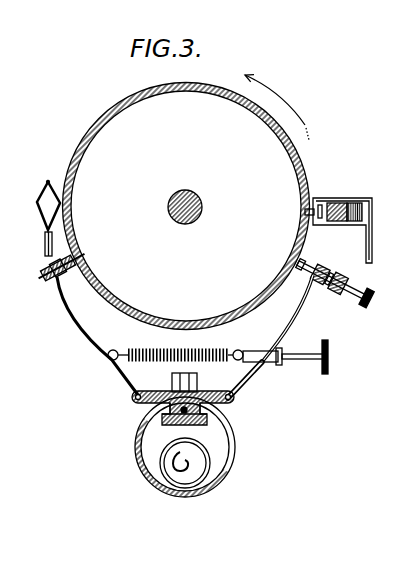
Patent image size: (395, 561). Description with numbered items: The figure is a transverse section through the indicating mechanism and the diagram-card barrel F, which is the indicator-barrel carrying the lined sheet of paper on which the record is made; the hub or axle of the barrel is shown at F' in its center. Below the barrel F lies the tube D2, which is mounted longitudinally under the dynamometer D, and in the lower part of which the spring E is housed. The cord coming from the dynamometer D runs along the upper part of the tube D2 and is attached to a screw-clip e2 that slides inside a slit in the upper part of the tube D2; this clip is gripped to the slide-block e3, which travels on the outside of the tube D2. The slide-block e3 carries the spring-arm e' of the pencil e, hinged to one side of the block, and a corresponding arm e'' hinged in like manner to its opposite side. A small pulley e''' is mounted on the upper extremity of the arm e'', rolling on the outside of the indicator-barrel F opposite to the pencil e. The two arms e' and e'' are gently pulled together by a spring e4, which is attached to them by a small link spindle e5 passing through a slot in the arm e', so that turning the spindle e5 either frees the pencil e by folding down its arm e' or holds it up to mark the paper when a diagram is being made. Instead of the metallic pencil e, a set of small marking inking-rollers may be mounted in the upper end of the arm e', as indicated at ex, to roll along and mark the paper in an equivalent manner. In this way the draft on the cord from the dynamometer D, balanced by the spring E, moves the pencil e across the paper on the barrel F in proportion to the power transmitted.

The indicator-barrel F is at (186, 206).
The hub or axle of the wheel F' is at (185, 223).
The marking inking-rollers ex is at (333, 204).
The recording-pencil e is at (334, 277).
The spring-arm e' is at (309, 319).
The corresponding arm e'' is at (80, 313).
The small pulley e''' is at (52, 234).
The screw-clip e2 is at (204, 411).
The slide-block e3 is at (205, 396).
The spring e4 is at (223, 352).
The link spindle e5 is at (297, 358).
The dynamometer D is at (166, 421).
The tube D2 is at (139, 430).
The spring E is at (185, 463).